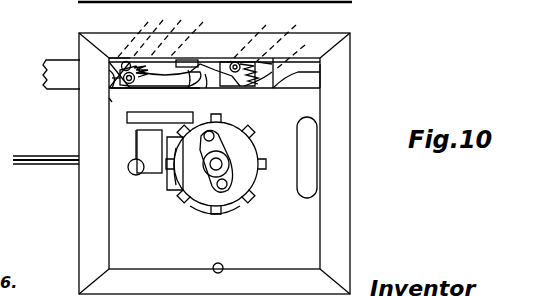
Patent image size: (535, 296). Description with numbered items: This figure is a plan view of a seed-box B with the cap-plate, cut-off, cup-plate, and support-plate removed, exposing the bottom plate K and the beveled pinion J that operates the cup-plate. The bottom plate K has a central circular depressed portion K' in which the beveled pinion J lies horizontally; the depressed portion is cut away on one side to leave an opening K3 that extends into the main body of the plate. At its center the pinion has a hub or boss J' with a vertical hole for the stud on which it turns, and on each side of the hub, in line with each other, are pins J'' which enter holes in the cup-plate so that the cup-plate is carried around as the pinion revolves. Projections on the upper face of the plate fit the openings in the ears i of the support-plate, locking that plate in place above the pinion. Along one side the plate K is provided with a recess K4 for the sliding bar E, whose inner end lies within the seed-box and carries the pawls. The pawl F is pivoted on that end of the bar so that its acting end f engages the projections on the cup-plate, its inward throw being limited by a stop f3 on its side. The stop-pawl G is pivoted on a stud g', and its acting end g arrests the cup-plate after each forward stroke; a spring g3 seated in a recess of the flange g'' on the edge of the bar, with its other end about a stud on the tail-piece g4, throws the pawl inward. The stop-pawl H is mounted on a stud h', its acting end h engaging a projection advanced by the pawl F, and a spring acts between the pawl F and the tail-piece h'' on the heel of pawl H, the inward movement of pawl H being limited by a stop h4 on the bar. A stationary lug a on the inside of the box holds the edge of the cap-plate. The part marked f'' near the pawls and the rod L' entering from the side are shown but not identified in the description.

The pawl F is at (153, 96).
The acting end of stop-pawl H h is at (171, 140).
The tail-piece h'' is at (155, 41).
The stop h4 is at (187, 36).
The stop f3 is at (215, 46).
The acting end of pawl F f is at (183, 84).
The acting end of stop-pawl G g is at (202, 86).
The rod f'' is at (103, 73).
The stop-pawl G is at (233, 62).
The stationary lug a is at (235, 60).
The stud or pin g' is at (260, 48).
The tail-piece g4 is at (283, 37).
The spring g3 is at (296, 49).
The flange g'' is at (296, 81).
The recess K4 is at (314, 76).
The stop-pawl H is at (120, 58).
The stud or pivot h' is at (98, 112).
The sliding bar E is at (61, 74).
The rod L' is at (46, 174).
The bottom plate K is at (227, 184).
The beveled pinion J is at (224, 171).
The hub or boss J' is at (221, 139).
The pins J'' is at (233, 178).
The ears i is at (216, 161).
The opening K3 is at (170, 196).
The central circular depressed portion K' is at (215, 225).
The seed-box B is at (317, 168).